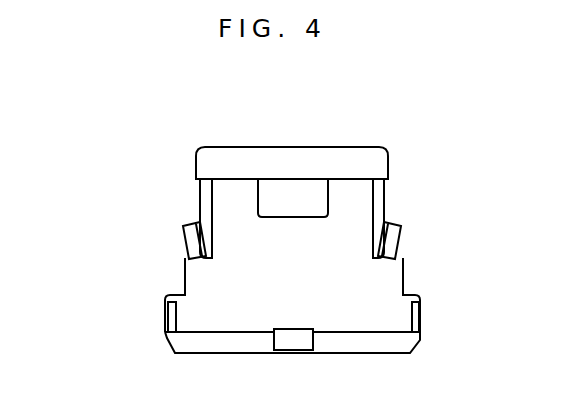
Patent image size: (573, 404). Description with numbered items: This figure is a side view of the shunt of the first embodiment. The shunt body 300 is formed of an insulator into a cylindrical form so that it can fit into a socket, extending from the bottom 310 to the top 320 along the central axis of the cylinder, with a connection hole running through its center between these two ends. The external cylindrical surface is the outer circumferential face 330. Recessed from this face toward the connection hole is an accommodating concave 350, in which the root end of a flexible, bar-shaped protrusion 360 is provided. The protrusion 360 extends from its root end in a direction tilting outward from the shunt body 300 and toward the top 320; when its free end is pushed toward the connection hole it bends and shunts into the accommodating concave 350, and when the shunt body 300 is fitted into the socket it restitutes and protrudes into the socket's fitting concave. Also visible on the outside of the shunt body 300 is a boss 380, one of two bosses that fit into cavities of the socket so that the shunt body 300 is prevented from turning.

The shunt body 300 is at (62, 105).
The bottom 310 is at (372, 354).
The top 320 is at (348, 146).
The outer circumferential face 330 is at (381, 290).
The accommodating concave 350 is at (205, 224).
The protrusion 360 is at (183, 238).
The boss 380 is at (296, 193).